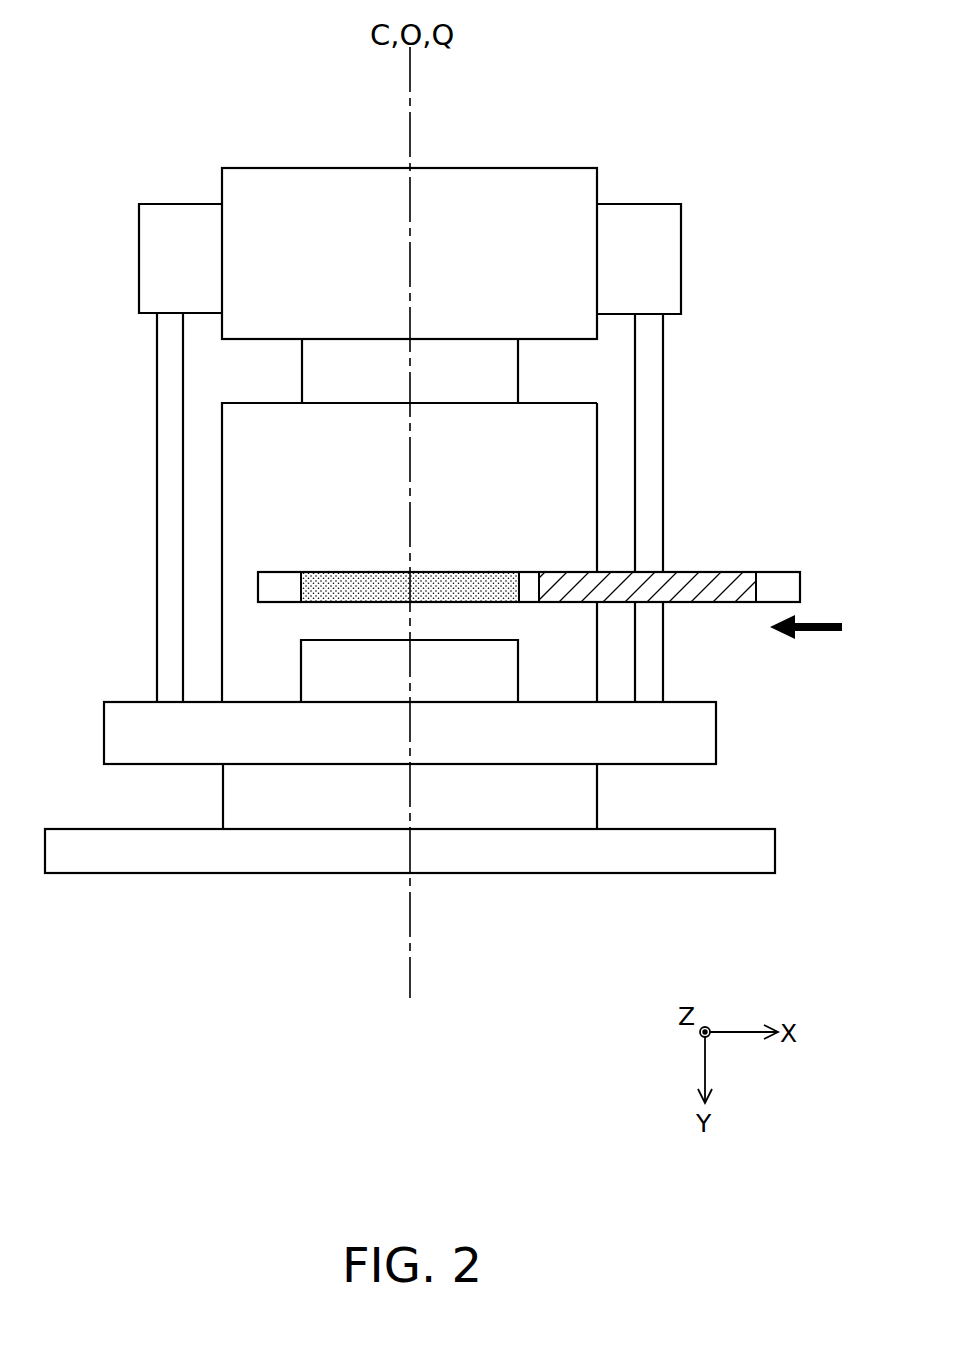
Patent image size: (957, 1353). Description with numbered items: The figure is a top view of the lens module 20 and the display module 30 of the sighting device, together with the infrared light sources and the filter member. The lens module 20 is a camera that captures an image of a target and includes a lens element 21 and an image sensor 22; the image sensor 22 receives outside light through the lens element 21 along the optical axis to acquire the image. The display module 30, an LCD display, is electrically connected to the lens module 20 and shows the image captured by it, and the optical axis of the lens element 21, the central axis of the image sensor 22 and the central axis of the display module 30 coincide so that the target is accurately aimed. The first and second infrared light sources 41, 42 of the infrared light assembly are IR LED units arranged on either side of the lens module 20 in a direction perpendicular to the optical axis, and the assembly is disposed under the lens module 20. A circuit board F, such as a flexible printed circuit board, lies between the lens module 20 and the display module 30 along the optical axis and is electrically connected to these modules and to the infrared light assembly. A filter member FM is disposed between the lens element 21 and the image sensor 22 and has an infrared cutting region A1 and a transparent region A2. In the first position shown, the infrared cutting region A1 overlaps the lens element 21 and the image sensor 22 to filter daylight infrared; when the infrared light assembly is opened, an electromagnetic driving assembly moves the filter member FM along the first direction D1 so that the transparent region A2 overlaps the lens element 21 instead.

The lens module 20 is at (592, 128).
The lens element 21 is at (246, 176).
The image sensor 22 is at (512, 669).
The display module 30 is at (767, 851).
The first infrared light source 41 is at (672, 258).
The second infrared light source 42 is at (146, 257).
The infrared cutting region A1 is at (383, 578).
The transparent region A2 is at (676, 580).
The filter member FM is at (781, 565).
The circuit board F is at (707, 731).
The first direction D1 is at (806, 641).